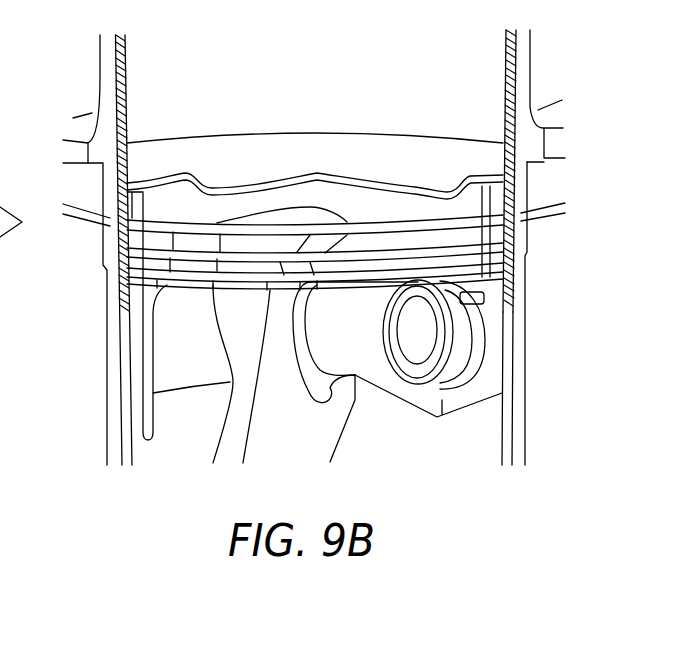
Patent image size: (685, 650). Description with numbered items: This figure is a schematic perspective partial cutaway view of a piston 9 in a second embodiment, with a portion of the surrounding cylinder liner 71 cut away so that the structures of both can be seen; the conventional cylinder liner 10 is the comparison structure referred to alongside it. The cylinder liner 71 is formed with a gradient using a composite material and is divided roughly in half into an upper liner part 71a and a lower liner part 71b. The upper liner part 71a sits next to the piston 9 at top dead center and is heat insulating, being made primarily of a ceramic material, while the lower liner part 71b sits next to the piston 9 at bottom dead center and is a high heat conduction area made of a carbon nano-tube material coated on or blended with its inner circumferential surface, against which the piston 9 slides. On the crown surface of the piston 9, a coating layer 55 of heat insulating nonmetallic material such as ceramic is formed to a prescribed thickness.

The piston 9 is at (437, 208).
The cylinder liner 10 is at (517, 327).
The coating layer 55 is at (450, 171).
The cylinder liner 71 is at (524, 88).
The upper liner part 71a is at (516, 147).
The lower liner part 71b is at (506, 383).